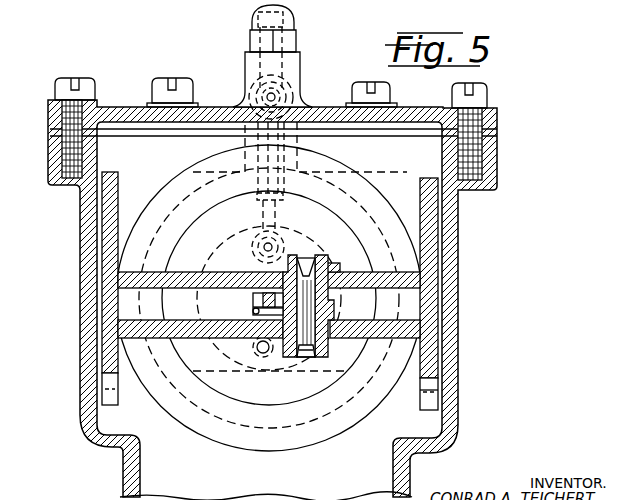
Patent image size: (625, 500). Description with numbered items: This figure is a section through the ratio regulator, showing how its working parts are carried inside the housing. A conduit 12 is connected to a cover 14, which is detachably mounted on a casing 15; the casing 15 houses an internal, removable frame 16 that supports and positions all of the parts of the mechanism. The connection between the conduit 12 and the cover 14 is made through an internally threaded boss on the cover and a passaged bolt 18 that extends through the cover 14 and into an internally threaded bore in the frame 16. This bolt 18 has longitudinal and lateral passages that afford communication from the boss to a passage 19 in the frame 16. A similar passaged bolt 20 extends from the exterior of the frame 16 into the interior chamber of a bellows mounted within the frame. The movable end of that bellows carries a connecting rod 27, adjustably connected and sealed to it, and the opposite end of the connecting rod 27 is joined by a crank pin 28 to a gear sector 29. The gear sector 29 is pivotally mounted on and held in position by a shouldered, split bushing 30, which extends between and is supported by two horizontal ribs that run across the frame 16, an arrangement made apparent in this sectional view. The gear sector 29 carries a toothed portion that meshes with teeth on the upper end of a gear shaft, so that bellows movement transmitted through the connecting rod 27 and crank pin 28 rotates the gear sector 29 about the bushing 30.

The conduit 12 is at (286, 97).
The cover 14 is at (212, 108).
The casing 15 is at (84, 292).
The frame 16 is at (434, 244).
The passaged bolt 18 is at (284, 73).
The passage 19 is at (273, 219).
The passaged bolt 20 is at (291, 243).
The connecting rod 27 is at (262, 293).
The crank pin 28 is at (256, 285).
The gear sector 29 is at (252, 311).
The split bushing 30 is at (357, 250).